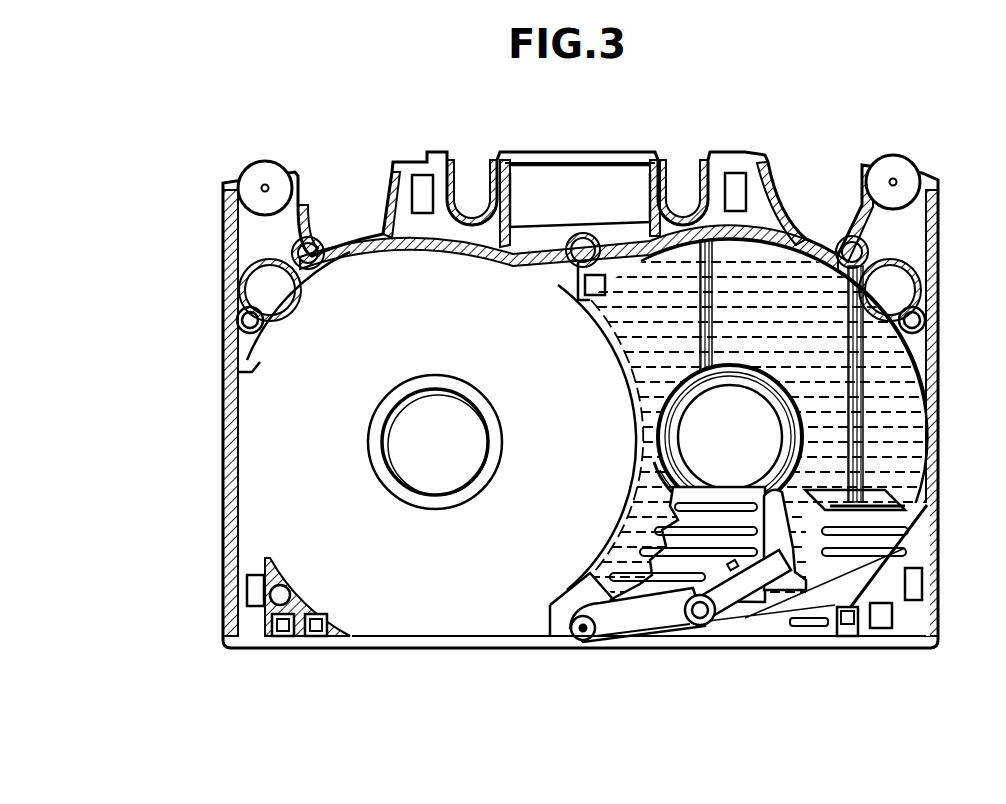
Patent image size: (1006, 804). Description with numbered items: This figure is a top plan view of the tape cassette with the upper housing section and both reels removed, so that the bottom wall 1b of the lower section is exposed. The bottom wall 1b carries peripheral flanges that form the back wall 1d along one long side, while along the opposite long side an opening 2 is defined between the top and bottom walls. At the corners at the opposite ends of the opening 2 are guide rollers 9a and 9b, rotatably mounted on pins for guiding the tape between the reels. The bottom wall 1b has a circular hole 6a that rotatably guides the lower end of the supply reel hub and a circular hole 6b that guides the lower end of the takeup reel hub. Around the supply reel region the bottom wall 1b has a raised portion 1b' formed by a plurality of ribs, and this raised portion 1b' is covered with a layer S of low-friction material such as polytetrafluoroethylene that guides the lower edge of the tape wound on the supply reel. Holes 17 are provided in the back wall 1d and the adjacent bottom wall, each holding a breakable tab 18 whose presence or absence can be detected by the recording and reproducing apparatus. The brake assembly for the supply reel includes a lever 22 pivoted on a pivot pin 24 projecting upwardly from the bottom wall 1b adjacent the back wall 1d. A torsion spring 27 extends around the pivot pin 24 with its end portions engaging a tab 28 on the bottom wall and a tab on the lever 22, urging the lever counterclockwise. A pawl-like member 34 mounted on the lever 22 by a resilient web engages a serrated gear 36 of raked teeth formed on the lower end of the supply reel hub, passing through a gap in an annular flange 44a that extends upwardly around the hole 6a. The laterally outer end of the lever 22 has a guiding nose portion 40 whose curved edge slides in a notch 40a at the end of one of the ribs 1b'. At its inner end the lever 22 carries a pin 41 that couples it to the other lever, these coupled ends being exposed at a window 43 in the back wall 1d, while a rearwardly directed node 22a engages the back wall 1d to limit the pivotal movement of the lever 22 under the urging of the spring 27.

The bottom wall 1b is at (553, 400).
The raised portion 1b' is at (895, 563).
The back wall 1d is at (462, 648).
The opening 2 is at (527, 152).
The circular hole 6a is at (682, 416).
The circular hole 6b is at (467, 404).
The guide roller 9a is at (905, 168).
The guide roller 9b is at (262, 178).
The layer of low friction material S is at (905, 358).
The holes 17 is at (284, 648).
The breakable tab 18 is at (315, 648).
The lever 22 is at (660, 622).
The node 22a is at (632, 640).
The pivot pin 24 is at (700, 628).
The torsion spring 27 is at (762, 600).
The tab 28 is at (800, 586).
The pawl-like member 34 is at (762, 497).
The serrated gear 36 is at (676, 441).
The guiding nose portion 40 is at (796, 625).
The notch 40a is at (914, 602).
The pin 41 is at (590, 636).
The window 43 is at (574, 640).
The annular flange 44a is at (658, 464).